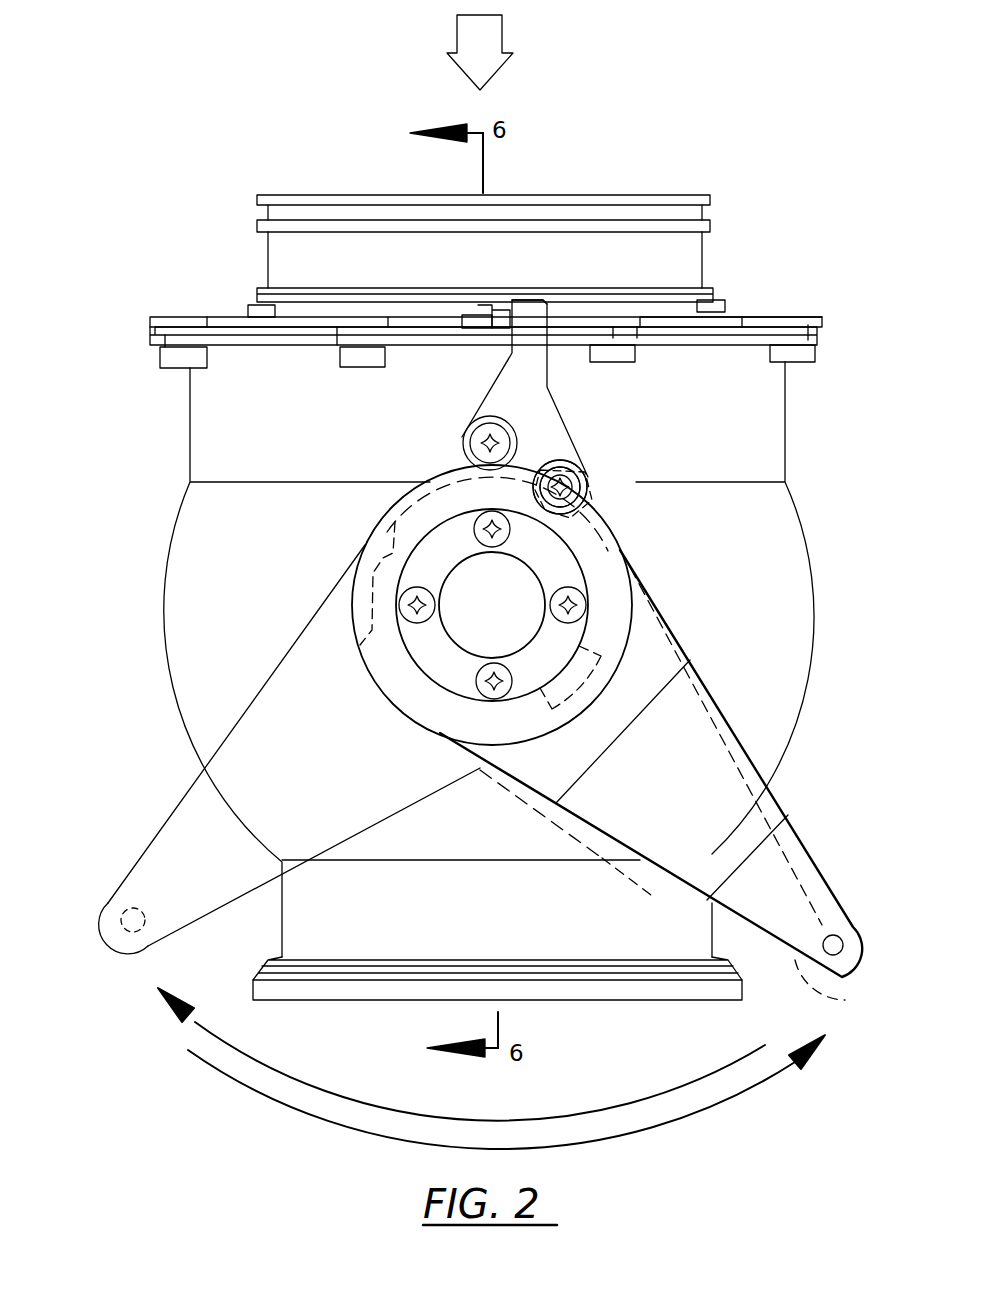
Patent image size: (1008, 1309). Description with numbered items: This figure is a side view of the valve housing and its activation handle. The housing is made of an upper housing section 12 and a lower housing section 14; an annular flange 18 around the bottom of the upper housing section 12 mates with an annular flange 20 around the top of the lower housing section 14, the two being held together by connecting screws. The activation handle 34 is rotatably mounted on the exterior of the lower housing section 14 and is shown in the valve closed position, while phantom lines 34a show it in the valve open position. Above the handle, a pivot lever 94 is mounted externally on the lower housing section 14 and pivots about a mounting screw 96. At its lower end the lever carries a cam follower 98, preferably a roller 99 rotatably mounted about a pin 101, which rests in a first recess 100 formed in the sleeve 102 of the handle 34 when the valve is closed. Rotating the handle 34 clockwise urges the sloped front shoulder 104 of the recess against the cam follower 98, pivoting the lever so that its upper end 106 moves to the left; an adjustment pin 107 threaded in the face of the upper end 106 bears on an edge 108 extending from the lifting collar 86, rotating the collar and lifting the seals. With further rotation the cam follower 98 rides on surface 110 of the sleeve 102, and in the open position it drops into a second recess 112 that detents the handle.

The upper housing section 12 is at (745, 248).
The lower housing section 14 is at (845, 597).
The annular flange 18 is at (824, 327).
The mating annular flange 20 is at (818, 333).
The activation handle 34 is at (830, 883).
The phantom lines 34a is at (142, 858).
The lifting collar 86 is at (793, 317).
The pivot lever 94 is at (527, 376).
The mounting screw 96 is at (472, 444).
The cam follower 98 is at (588, 490).
The roller 99 is at (590, 478).
The first recess 100 is at (585, 505).
The pin 101 is at (572, 476).
The sleeve 102 is at (440, 486).
The sloped front shoulder 104 is at (538, 486).
The upper end 106 is at (548, 300).
The adjustment pin 107 is at (500, 312).
The edge 108 is at (478, 322).
The surface 110 is at (415, 493).
The second recess 112 is at (393, 553).